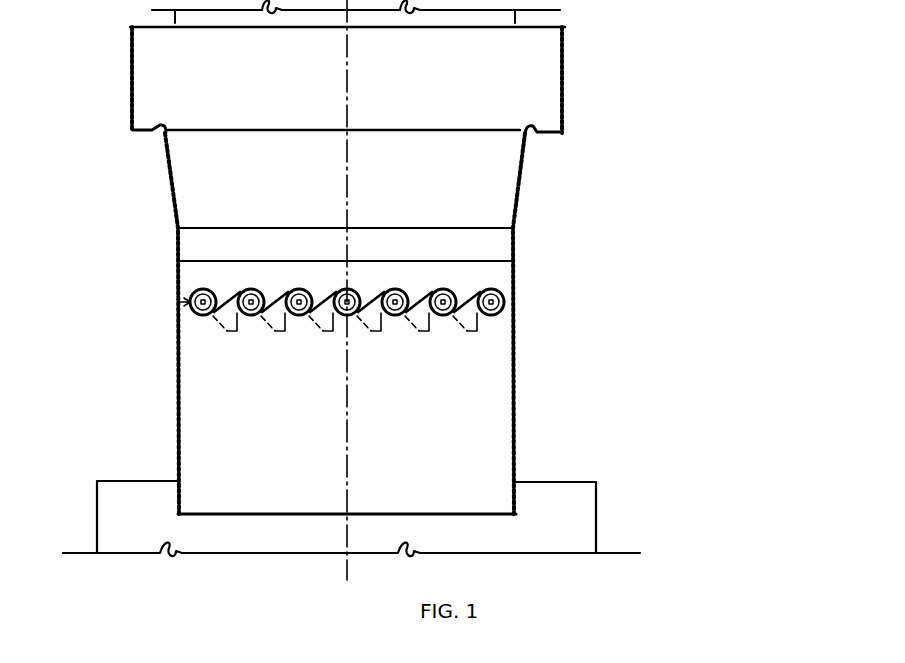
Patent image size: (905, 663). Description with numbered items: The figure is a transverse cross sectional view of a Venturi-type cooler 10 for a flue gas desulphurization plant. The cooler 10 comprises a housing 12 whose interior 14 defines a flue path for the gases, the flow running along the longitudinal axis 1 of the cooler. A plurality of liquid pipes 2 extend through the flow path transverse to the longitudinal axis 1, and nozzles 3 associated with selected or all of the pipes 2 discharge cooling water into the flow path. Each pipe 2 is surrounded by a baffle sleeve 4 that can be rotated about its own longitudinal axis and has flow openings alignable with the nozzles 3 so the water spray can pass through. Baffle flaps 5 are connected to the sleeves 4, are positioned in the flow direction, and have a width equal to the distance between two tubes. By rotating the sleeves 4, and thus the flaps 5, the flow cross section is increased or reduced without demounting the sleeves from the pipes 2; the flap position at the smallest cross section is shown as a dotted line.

The longitudinal axis 1 is at (347, 400).
The liquid pipes 2 is at (212, 318).
The nozzles 3 is at (300, 287).
The baffle sleeve 4 is at (396, 318).
The baffle flaps 5 is at (372, 318).
The Venturi-type cooler 10 is at (176, 262).
The housing 12 is at (566, 97).
The interior 14 is at (442, 93).